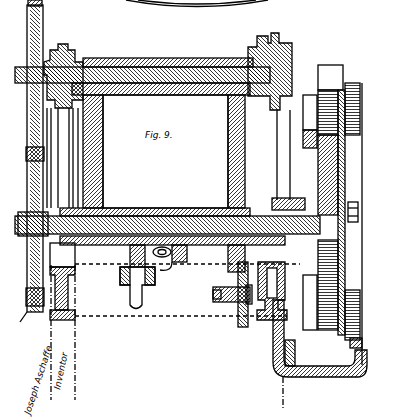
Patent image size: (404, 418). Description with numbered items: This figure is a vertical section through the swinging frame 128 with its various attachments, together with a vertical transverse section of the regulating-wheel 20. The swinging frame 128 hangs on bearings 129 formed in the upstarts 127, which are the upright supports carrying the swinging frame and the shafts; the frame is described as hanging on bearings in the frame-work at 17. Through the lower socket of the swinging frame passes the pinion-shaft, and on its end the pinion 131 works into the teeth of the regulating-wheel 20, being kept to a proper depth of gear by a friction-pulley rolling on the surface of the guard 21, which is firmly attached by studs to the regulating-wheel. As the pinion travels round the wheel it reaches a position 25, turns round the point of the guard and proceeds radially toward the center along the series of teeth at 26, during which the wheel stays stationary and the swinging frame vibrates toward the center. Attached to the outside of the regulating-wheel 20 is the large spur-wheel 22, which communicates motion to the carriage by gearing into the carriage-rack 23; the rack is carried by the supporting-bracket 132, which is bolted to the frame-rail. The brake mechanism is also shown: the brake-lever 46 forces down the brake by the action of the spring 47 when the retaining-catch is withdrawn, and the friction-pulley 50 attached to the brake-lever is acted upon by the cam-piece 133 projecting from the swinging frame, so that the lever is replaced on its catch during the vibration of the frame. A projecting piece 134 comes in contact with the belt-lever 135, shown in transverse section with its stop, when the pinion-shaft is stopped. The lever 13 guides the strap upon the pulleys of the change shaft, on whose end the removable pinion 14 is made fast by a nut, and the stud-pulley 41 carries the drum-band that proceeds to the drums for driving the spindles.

The lever 13 is at (30, 72).
The pinion 14 is at (33, 159).
The bearings 129 is at (72, 67).
The upstarts 127 is at (274, 98).
The swinging frame 128 is at (287, 247).
The position of pinion 25 is at (70, 246).
The series of teeth 26 is at (71, 309).
The bearings of swinging frame 17 is at (146, 281).
The belt-lever 135 is at (162, 257).
The projecting piece 134 is at (182, 257).
The cam-piece 133 is at (228, 258).
The friction-pulley 50 is at (240, 302).
The brake-lever 46 is at (228, 290).
The spring 47 is at (252, 289).
The stud-pulley 41 is at (274, 291).
The large spur-wheel 22 is at (362, 114).
The supporting-bracket 132 is at (314, 363).
The regulating-wheel 20 is at (339, 197).
The guard 21 is at (312, 97).
The pinion 131 is at (350, 215).
The carriage-rack 23 is at (358, 343).